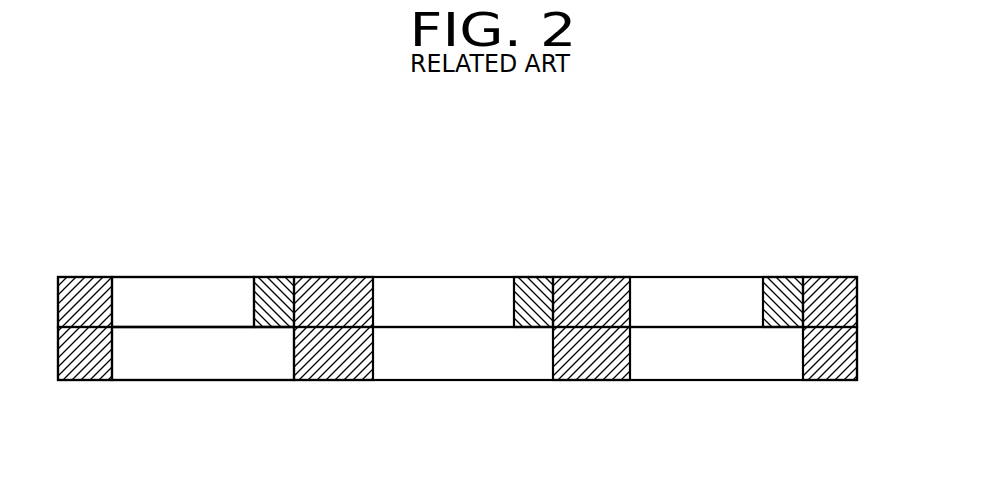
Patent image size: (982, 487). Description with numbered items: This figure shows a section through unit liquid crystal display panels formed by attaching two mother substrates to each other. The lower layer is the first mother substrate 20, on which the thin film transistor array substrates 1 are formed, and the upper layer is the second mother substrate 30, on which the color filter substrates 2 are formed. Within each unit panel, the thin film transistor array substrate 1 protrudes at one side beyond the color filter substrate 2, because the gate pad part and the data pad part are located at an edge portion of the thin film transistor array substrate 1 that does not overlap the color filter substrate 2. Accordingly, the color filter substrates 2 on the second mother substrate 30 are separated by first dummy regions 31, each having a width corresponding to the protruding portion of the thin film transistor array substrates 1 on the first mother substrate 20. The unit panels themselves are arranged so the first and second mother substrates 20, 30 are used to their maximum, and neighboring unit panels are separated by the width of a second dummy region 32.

The thin film transistor array substrate 1 is at (183, 372).
The color filter substrate 2 is at (185, 282).
The first mother substrate 20 is at (862, 329).
The second mother substrate 30 is at (862, 277).
The first dummy region 31 is at (276, 277).
The second dummy region 32 is at (88, 277).